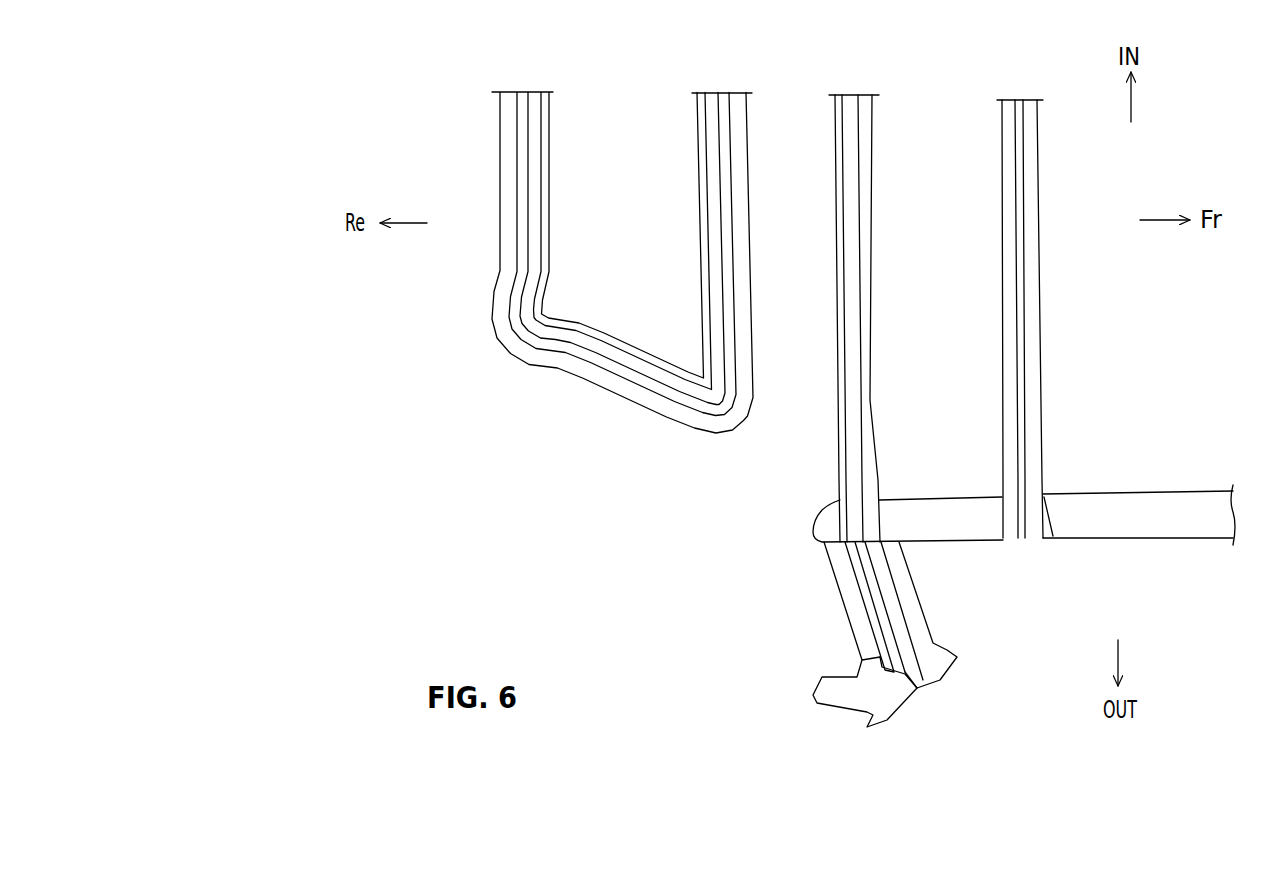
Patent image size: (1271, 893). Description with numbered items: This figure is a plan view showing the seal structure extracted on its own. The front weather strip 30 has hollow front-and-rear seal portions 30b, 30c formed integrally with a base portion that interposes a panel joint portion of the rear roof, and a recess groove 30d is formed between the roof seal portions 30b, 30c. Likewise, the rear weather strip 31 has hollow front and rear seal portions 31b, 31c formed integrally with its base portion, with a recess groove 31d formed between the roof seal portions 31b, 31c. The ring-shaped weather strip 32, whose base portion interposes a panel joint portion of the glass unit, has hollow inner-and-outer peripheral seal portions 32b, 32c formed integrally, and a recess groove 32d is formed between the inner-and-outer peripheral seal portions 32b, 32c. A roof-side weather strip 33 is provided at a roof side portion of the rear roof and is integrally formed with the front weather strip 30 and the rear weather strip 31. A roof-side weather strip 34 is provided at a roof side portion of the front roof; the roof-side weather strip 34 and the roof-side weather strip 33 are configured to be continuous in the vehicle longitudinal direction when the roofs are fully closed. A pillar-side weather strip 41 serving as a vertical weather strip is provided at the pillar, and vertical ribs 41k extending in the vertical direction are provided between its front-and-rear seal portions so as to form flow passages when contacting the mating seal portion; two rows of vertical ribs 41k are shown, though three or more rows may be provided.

The front weather strip 30 is at (1016, 319).
The front seal portion 30b is at (1038, 259).
The rear seal portion 30c is at (1003, 301).
The recess groove 30d is at (1021, 337).
The rear weather strip 31 is at (861, 318).
The front seal portion 31b is at (874, 138).
The rear seal portion 31c is at (836, 145).
The recess groove 31d is at (851, 192).
The ring-shaped weather strip 32 is at (653, 262).
The inner peripheral seal portion 32b is at (710, 256).
The outer peripheral seal portion 32c is at (748, 259).
The recess groove 32d is at (722, 195).
The roof-side weather strip 33 is at (959, 547).
The roof-side weather strip 34 is at (1153, 542).
The pillar-side weather strip 41 is at (840, 634).
The vertical ribs 41k is at (883, 640).